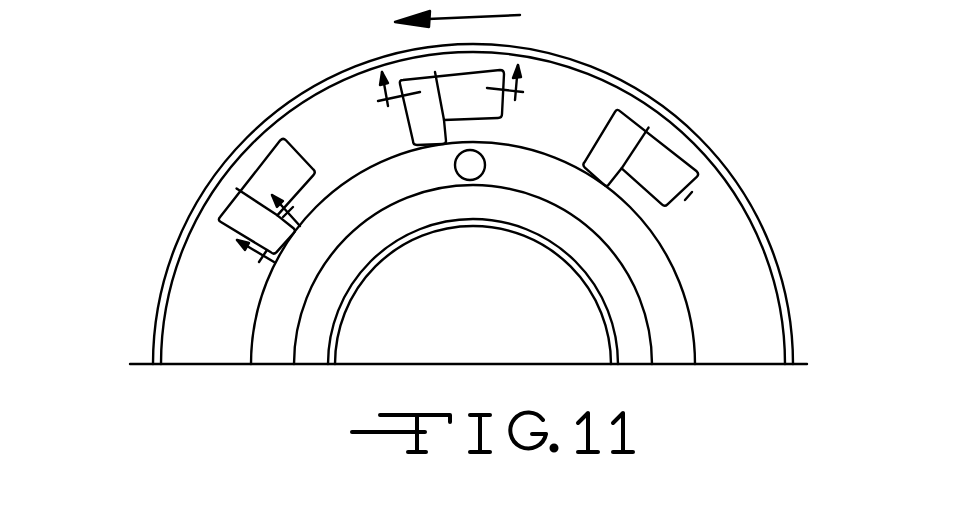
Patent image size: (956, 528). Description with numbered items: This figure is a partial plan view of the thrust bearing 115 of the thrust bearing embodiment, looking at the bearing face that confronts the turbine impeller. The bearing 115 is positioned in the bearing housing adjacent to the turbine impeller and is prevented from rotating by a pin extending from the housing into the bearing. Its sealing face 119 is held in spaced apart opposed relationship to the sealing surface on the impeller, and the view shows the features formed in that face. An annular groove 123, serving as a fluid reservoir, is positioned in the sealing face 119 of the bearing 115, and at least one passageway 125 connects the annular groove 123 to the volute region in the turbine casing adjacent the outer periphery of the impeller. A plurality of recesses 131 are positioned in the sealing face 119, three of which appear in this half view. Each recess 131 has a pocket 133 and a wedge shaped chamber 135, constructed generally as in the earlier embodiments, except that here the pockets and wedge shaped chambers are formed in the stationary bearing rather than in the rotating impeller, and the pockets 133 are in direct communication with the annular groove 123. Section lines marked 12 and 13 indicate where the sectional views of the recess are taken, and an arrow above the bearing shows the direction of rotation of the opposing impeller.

The section line 12- 12 is at (457, 101).
The section line 13- 13 is at (304, 244).
The thrust bearing 115 is at (188, 219).
The sealing face 119 is at (723, 227).
The annular groove 123 is at (675, 352).
The passageway 125 is at (471, 180).
The recess 131 is at (602, 127).
The pocket 133 is at (627, 130).
The wedge shaped chamber 135 is at (670, 170).